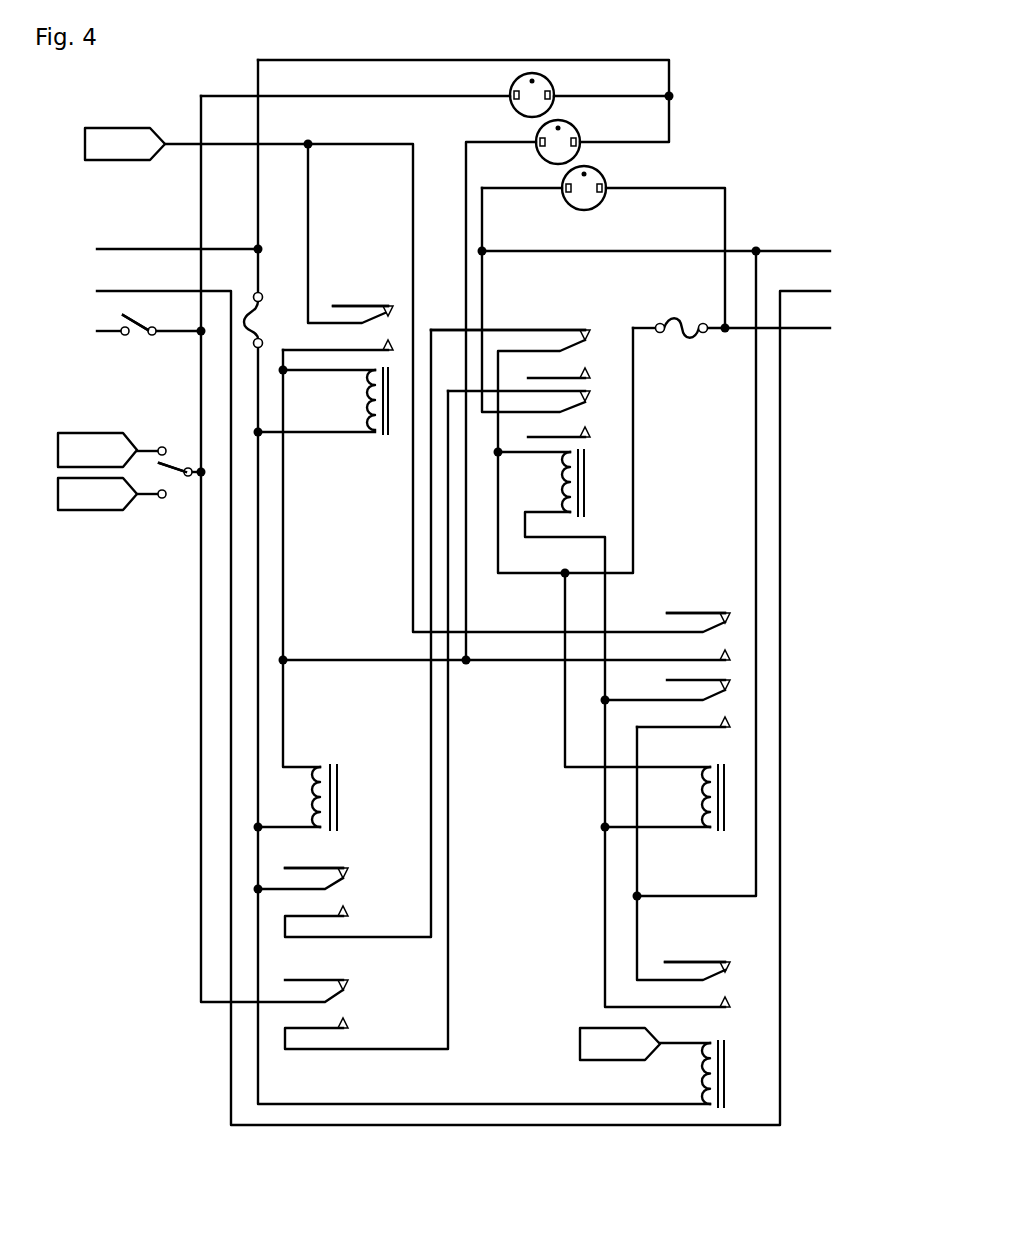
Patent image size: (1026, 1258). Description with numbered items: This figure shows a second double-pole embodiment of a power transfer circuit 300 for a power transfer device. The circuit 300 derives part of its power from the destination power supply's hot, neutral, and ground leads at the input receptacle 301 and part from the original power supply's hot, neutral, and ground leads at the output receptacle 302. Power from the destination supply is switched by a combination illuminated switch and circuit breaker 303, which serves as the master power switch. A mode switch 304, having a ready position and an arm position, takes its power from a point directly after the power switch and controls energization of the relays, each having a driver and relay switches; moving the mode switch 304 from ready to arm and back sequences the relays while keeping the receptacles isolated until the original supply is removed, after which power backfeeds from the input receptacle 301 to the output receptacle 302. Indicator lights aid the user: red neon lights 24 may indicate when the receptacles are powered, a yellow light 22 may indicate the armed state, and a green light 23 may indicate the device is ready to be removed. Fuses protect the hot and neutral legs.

The yellow light 22 is at (536, 74).
The green light 23 is at (562, 121).
The red neon lights 24 is at (588, 167).
The power transfer circuit 300 is at (463, 579).
The input receptacle 301 is at (60, 235).
The output receptacle 302 is at (864, 236).
The combination illuminated switch and circuit breaker 303 is at (136, 338).
The mode switch 304 is at (182, 490).